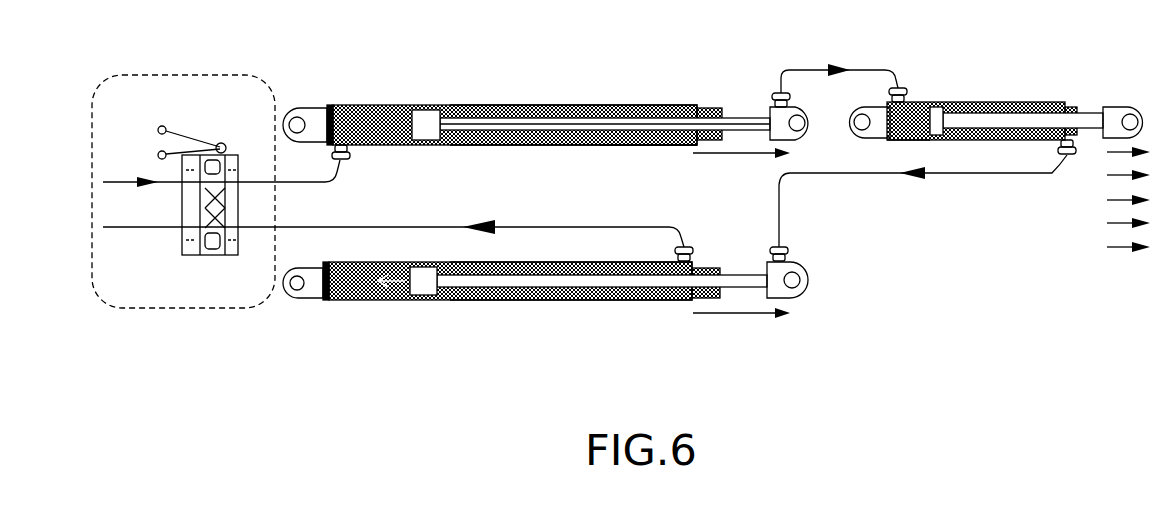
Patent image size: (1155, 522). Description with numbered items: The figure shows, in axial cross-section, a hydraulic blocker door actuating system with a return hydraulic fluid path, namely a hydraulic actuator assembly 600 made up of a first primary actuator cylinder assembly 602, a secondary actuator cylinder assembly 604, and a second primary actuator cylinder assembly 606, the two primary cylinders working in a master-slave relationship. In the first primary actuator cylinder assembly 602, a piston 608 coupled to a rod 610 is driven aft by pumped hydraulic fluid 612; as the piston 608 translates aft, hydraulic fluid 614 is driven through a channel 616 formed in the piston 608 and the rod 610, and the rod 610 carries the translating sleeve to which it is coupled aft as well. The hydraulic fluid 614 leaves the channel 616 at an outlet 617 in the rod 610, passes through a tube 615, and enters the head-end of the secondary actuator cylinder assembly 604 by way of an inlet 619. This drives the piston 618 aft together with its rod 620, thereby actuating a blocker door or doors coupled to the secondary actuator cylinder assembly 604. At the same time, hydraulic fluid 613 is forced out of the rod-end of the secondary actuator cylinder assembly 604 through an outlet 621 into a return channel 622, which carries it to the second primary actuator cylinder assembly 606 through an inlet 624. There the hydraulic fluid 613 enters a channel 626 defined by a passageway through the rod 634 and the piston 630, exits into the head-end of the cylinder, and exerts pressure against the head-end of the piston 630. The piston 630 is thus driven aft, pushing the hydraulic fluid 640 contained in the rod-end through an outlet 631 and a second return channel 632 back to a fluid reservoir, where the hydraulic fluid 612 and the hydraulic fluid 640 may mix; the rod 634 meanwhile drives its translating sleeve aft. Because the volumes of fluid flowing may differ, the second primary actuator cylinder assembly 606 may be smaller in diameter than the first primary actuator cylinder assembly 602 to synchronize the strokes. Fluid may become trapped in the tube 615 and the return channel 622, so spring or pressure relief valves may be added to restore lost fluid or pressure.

The hydraulic actuator assembly 600 is at (183, 50).
The first primary actuator cylinder assembly 602 is at (333, 105).
The secondary actuator cylinder assembly 604 is at (975, 102).
The second primary actuator cylinder assembly 606 is at (385, 300).
The piston 608 is at (415, 105).
The rod 610 is at (535, 105).
The hydraulic fluid 612 is at (360, 105).
The hydraulic fluid 613 is at (1060, 100).
The hydraulic fluid 614 is at (630, 147).
The tube 615 is at (840, 68).
The channel 616 is at (600, 105).
The outlet 617 is at (778, 93).
The piston 618 is at (935, 107).
The inlet 619 is at (897, 88).
The rod 620 is at (1035, 118).
The outlet 621 is at (1066, 157).
The return channel 622 is at (940, 175).
The inlet 624 is at (785, 250).
The channel 626 is at (640, 300).
The piston 630 is at (428, 296).
The outlet 631 is at (686, 247).
The second return channel 632 is at (548, 225).
The rod 634 is at (528, 300).
The hydraulic fluid 640 is at (665, 302).